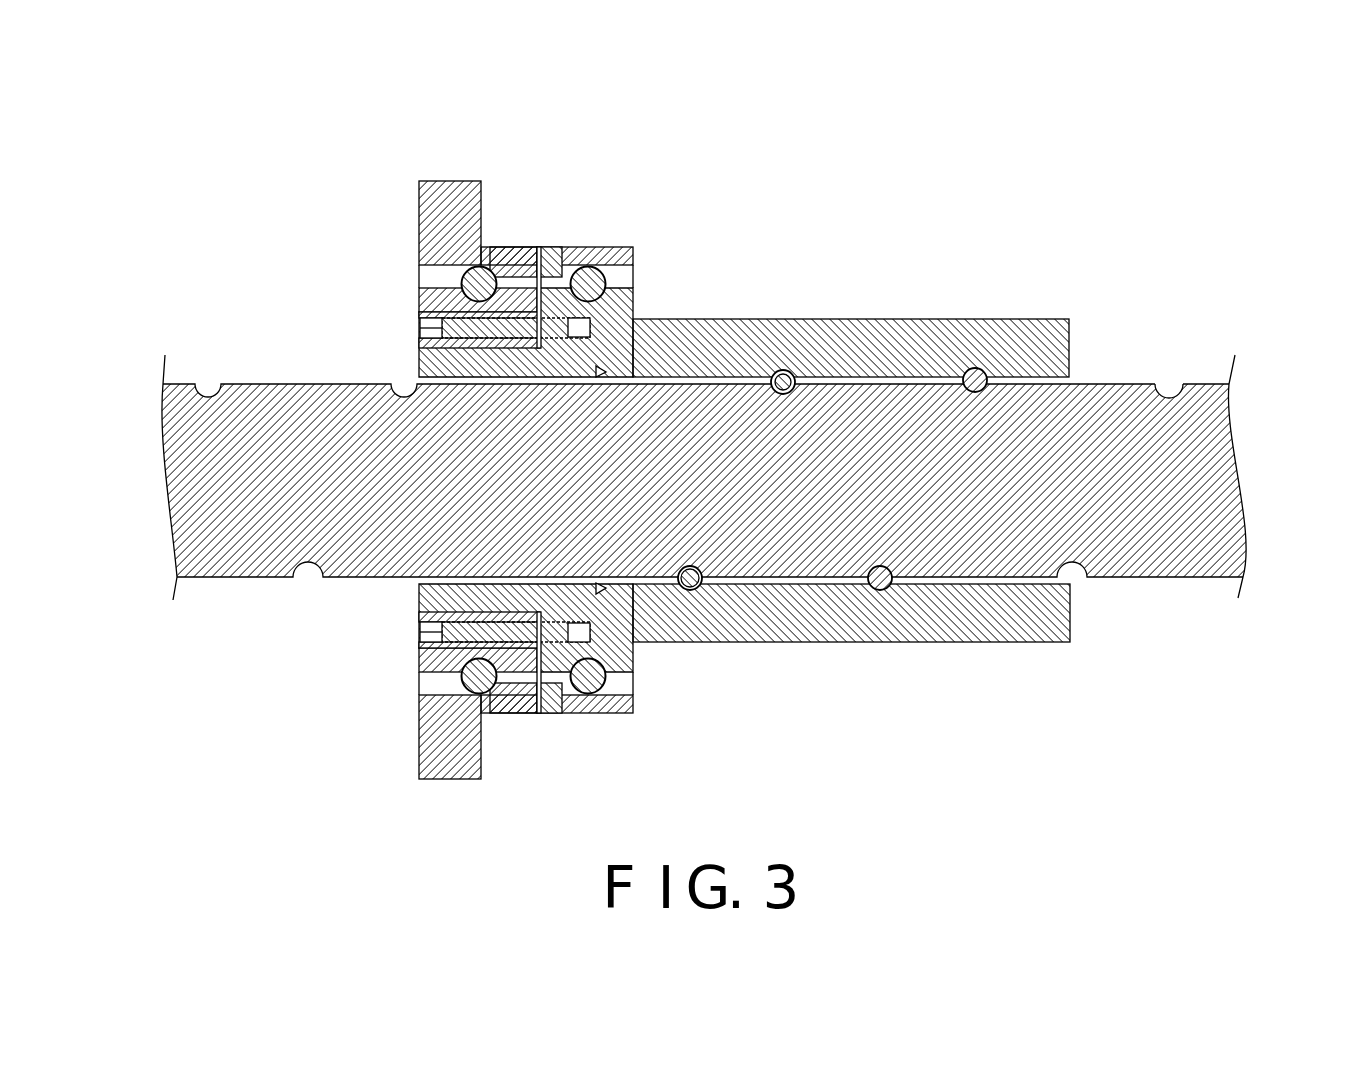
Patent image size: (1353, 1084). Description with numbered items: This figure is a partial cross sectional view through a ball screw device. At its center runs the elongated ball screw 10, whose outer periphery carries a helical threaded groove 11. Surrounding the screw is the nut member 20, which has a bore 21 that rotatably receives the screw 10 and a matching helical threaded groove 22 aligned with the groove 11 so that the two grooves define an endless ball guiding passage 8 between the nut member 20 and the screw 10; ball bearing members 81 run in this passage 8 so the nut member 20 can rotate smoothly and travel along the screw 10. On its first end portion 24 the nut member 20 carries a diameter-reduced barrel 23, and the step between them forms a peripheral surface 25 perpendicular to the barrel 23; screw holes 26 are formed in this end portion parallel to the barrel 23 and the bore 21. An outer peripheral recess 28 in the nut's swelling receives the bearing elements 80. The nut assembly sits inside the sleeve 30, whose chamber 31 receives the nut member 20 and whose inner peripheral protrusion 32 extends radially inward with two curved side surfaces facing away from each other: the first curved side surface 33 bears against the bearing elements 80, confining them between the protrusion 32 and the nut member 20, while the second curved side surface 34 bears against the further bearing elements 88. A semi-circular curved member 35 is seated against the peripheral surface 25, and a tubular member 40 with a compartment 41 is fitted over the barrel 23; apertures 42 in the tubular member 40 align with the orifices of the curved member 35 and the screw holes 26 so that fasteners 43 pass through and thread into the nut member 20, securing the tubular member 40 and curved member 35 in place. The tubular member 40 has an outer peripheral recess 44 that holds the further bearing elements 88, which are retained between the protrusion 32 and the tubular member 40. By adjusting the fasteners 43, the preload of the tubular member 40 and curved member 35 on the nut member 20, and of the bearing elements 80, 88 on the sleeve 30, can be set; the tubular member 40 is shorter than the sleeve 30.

The ball screw 10 is at (1222, 505).
The helical threaded groove 11 is at (1167, 392).
The barrel 23 is at (433, 418).
The nut member 20 is at (883, 335).
The bore 21 is at (972, 588).
The helical threaded groove 22 is at (768, 375).
The endless ball guiding passage 8 is at (983, 368).
The ball bearing members 81 is at (700, 590).
The first end portion 24 is at (419, 369).
The tubular member 40 is at (420, 288).
The outer peripheral recess 44 is at (419, 302).
The apertures 42 is at (419, 342).
The fasteners 43 is at (419, 328).
The screw holes 26 is at (575, 318).
The sleeve 30 is at (420, 183).
The chamber 31 is at (634, 272).
The second curved side surface 34 is at (493, 247).
The inner peripheral protrusion 32 is at (526, 263).
The curved member 35 is at (541, 287).
The first curved side surface 33 is at (581, 247).
The compartment 41 is at (419, 598).
The further bearing elements 88 is at (455, 714).
The outer peripheral recess 28 is at (635, 650).
The peripheral surface 25 is at (552, 668).
The bearing elements 80 is at (600, 692).